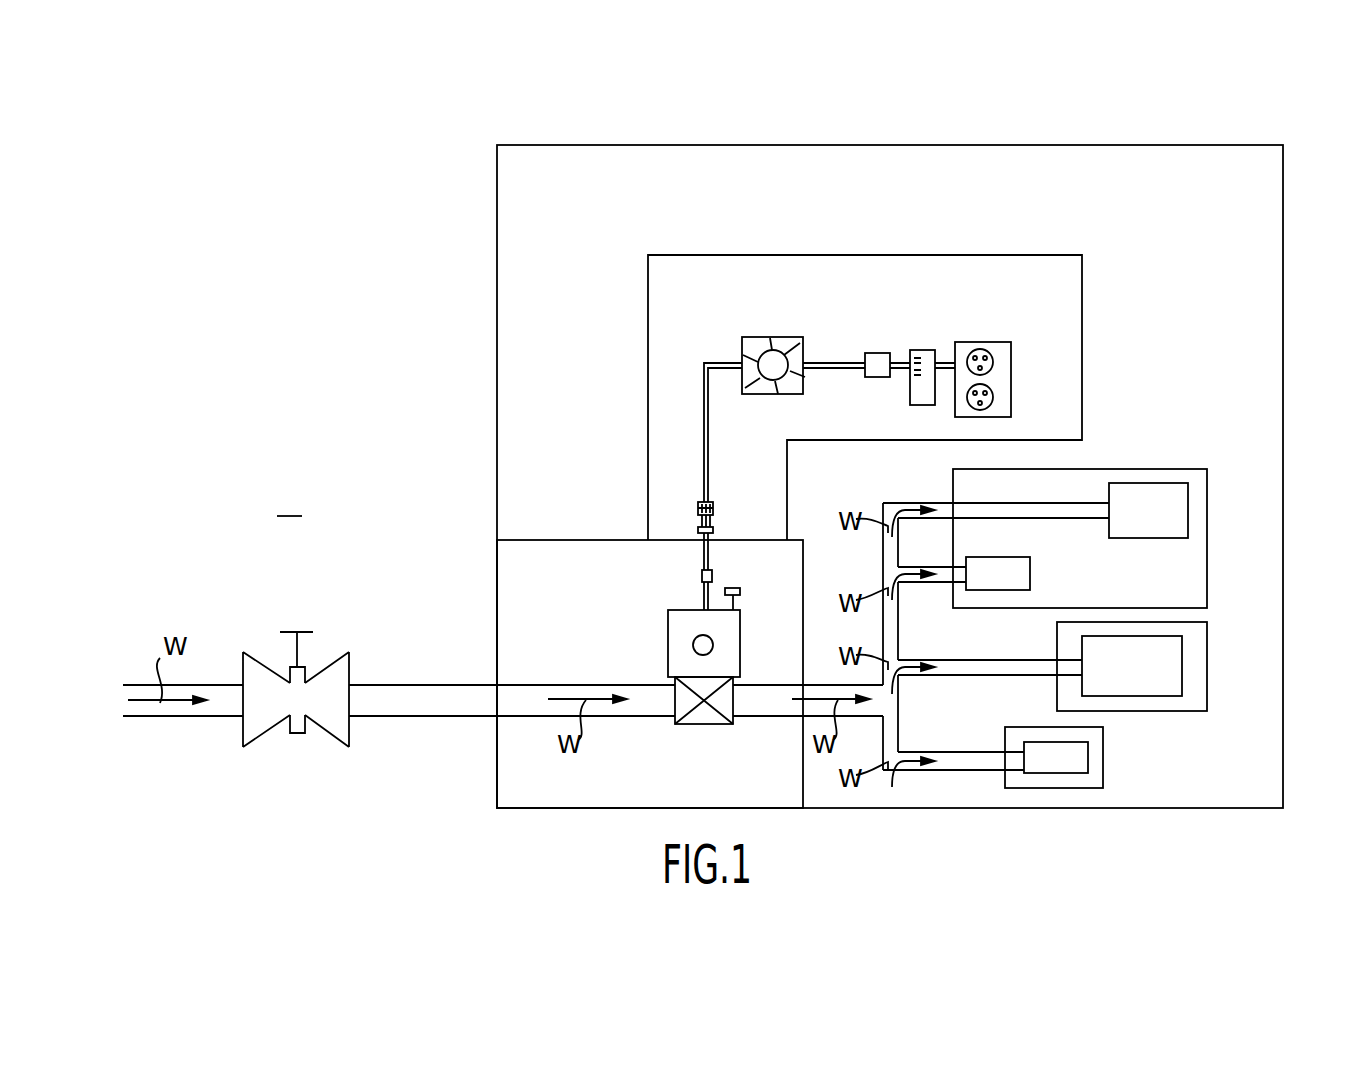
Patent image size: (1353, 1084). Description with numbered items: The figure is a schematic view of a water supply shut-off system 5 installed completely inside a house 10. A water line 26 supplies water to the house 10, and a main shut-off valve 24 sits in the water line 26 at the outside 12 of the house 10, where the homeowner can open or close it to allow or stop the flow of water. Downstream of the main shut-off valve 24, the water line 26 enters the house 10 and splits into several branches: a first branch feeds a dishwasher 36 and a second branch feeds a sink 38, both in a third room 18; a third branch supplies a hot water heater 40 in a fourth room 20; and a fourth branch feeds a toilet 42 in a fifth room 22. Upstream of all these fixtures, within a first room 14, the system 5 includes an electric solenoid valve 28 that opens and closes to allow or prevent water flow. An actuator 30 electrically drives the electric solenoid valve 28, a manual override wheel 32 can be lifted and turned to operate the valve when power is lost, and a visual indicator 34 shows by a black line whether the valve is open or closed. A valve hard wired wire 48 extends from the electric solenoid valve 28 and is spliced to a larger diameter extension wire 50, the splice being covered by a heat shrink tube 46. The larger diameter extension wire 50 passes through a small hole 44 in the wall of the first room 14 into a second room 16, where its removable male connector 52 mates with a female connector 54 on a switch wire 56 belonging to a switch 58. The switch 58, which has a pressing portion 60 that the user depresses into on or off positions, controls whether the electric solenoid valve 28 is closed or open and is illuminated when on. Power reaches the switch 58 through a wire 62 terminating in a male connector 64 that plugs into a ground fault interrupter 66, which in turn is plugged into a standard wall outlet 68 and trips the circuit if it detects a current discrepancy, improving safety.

The water supply shut-off system 5 is at (600, 276).
The house 10 is at (497, 190).
The outside 12 is at (289, 503).
The first room 14 is at (547, 594).
The second room 16 is at (872, 293).
The third room 18 is at (1098, 469).
The fourth room 20 is at (1207, 640).
The fifth room 22 is at (1103, 755).
The main shut-off valve 24 is at (341, 626).
The water line 26 is at (430, 700).
The electric solenoid valve 28 is at (646, 672).
The actuator 30 is at (680, 625).
The manual override wheel 32 is at (742, 591).
The visual indicator 34 is at (698, 645).
The dishwasher 36 is at (1168, 483).
The sink 38 is at (1032, 573).
The hot water heater 40 is at (1180, 677).
The toilet 42 is at (1040, 743).
The hole 44 is at (721, 529).
The heat shrink tube 46 is at (712, 575).
The valve hard wired wire 48 is at (702, 598).
The larger diameter extension wire 50 is at (702, 548).
The male connector 52 is at (698, 530).
The female connector 54 is at (698, 507).
The switch wire 56 is at (705, 388).
The switch 58 is at (745, 345).
The pressing portion 60 is at (783, 372).
The wire 62 is at (825, 362).
The male connector 64 is at (877, 353).
The ground fault interrupter 66 is at (923, 350).
The wall outlet 68 is at (1002, 342).